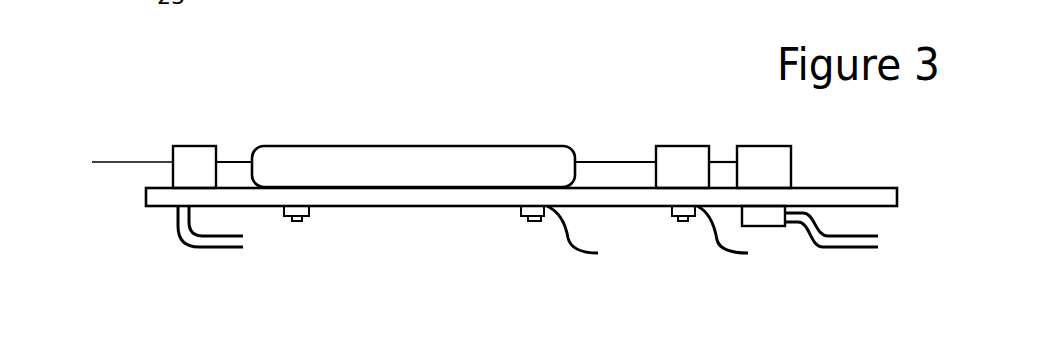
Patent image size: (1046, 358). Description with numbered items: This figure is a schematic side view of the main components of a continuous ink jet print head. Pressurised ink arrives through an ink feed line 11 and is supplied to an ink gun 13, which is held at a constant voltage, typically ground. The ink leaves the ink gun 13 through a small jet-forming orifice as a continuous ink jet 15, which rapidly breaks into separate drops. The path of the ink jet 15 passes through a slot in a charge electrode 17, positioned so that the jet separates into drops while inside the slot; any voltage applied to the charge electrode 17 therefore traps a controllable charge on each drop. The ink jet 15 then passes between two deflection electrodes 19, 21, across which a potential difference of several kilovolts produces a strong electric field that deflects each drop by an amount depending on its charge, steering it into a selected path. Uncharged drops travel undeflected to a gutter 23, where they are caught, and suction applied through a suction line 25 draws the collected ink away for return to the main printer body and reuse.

The ink feed line 11 is at (837, 248).
The ink gun 13 is at (763, 144).
The ink jet 15 is at (630, 162).
The charge electrode 17 is at (683, 144).
The deflection electrode 19 is at (413, 111).
The deflection electrode 21 is at (362, 145).
The gutter 23 is at (187, 145).
The suction line 25 is at (177, 225).